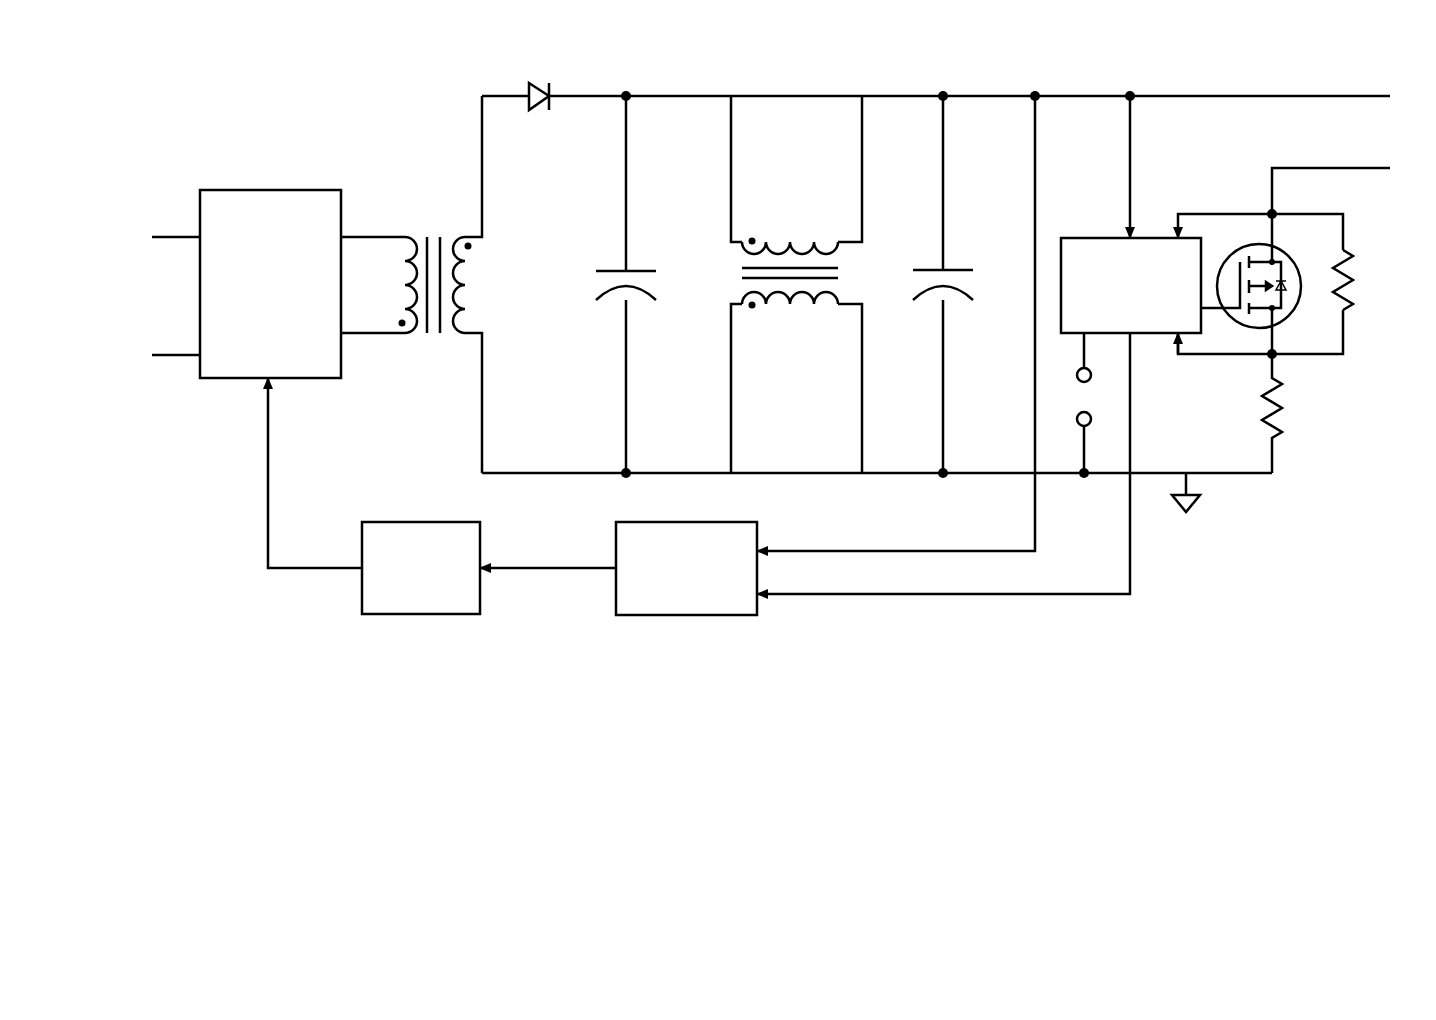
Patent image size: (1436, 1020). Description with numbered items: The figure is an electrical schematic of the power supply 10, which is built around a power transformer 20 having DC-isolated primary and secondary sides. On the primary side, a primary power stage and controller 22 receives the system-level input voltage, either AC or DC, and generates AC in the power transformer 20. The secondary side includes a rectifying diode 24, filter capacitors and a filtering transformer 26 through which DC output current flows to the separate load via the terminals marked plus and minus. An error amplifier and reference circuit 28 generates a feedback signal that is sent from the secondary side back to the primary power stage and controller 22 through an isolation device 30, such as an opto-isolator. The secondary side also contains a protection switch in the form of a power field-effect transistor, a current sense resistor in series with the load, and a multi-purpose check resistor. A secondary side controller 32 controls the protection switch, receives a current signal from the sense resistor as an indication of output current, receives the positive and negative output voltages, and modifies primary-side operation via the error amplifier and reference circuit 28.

The power supply 10 is at (756, 412).
The power transformer 20 is at (430, 222).
The primary power stage and controller 22 is at (302, 197).
The rectifying diode 24 is at (530, 93).
The filtering transformer 26 is at (803, 223).
The error amplifier and reference circuit 28 is at (720, 615).
The isolation device 30 is at (393, 615).
The secondary side controller 32 is at (1131, 285).